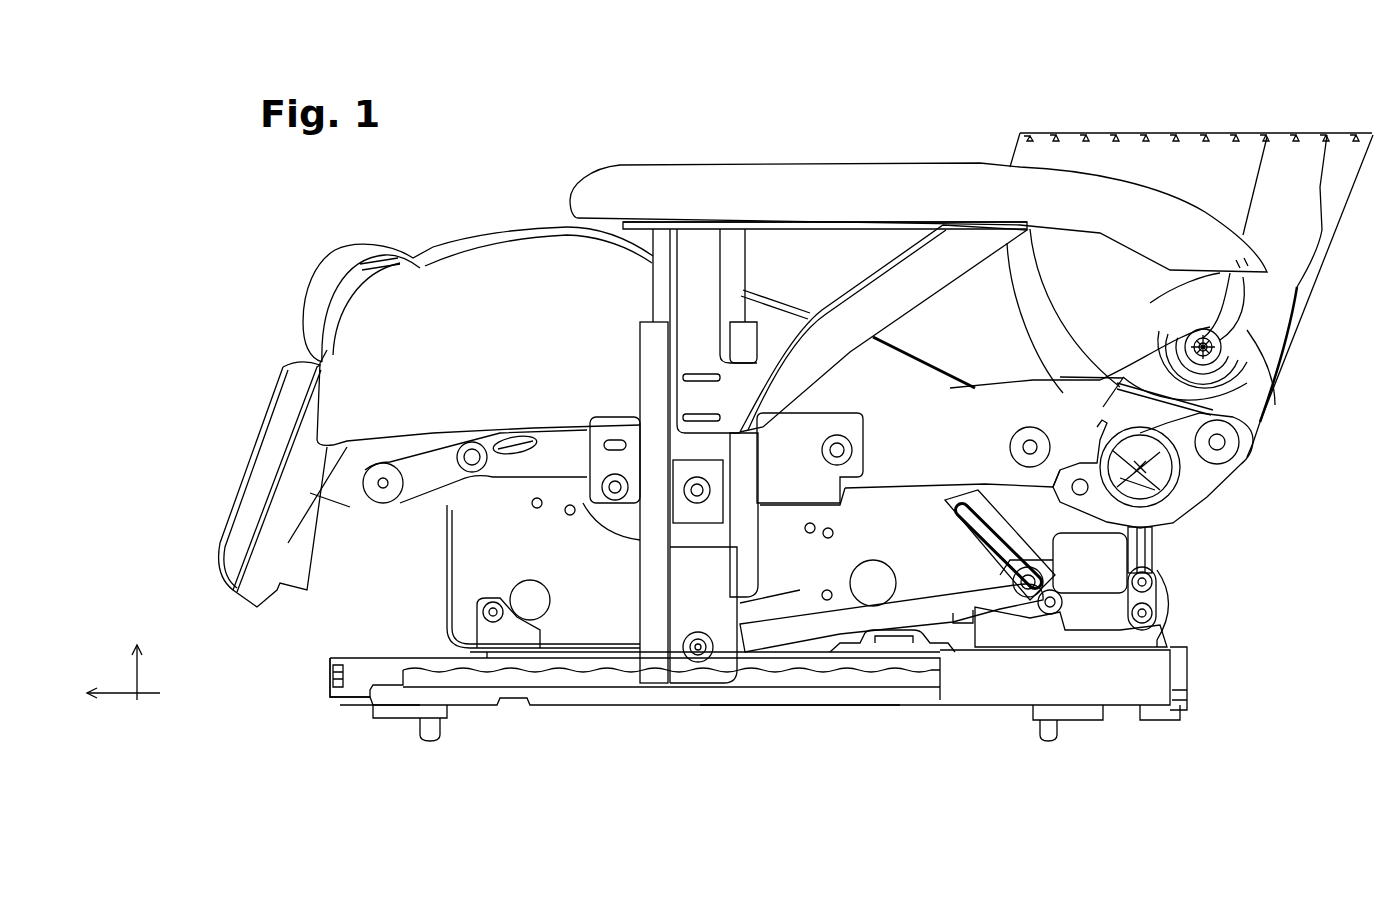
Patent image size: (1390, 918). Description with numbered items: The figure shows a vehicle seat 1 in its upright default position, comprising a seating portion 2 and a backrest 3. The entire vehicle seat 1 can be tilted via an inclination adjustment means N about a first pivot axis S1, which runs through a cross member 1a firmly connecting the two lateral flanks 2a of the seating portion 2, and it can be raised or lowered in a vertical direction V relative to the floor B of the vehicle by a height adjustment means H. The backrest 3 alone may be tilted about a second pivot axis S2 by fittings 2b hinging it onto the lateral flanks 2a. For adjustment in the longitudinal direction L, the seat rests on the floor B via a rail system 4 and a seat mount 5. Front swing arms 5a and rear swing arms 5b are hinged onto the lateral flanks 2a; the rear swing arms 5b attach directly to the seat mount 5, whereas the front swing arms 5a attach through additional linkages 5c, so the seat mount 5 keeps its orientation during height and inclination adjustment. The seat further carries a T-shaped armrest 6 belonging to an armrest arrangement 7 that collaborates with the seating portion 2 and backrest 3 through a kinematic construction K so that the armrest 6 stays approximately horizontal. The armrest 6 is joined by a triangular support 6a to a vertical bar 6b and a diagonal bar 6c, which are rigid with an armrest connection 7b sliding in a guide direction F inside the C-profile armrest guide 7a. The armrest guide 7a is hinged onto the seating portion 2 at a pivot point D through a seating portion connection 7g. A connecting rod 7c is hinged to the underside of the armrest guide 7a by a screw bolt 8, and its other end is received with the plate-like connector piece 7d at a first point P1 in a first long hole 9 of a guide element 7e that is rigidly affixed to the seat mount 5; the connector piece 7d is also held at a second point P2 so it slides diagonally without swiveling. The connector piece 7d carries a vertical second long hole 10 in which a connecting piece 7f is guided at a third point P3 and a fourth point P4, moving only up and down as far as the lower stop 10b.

The vehicle seat 1 is at (965, 100).
The cross member 1a is at (1163, 440).
The seating portion 2 is at (448, 265).
The lateral flanks 2a is at (1180, 513).
The fittings 2b is at (1253, 360).
The backrest 3 is at (1350, 150).
The rail system 4 is at (332, 672).
The seat mount 5 is at (580, 623).
The front swing arms 5a is at (375, 508).
The rear swing arms 5b is at (985, 503).
The additional linkages 5c is at (440, 497).
The armrest 6 is at (597, 185).
The triangular support 6a is at (690, 218).
The vertical bar 6b is at (688, 283).
The diagonal bar 6c is at (848, 305).
The armrest arrangement 7 is at (752, 158).
The armrest guide 7a is at (645, 365).
The armrest connection 7b is at (700, 450).
The connecting rod 7c is at (930, 600).
The connector piece 7d is at (1090, 603).
The guide element 7e is at (1073, 627).
The connecting piece 7f is at (1148, 600).
The seating portion connection 7g is at (623, 425).
The screw bolt 8 is at (697, 647).
The first long hole 9 is at (983, 537).
The second long hole 10 is at (1148, 553).
The lower stop 10b is at (1204, 622).
The first point P1 is at (1022, 592).
The second point P2 is at (1050, 612).
The third point P3 is at (1167, 572).
The fourth point P4 is at (1152, 617).
The first pivot axis S1 is at (1160, 468).
The second pivot axis S2 is at (1200, 340).
The pivot point D is at (687, 495).
The guide direction F is at (688, 575).
The kinematic construction K is at (824, 578).
The inclination adjustment means N is at (330, 604).
The height adjustment means H is at (822, 722).
The floor B is at (350, 707).
The vertical direction V is at (127, 652).
The longitudinal direction L is at (111, 694).